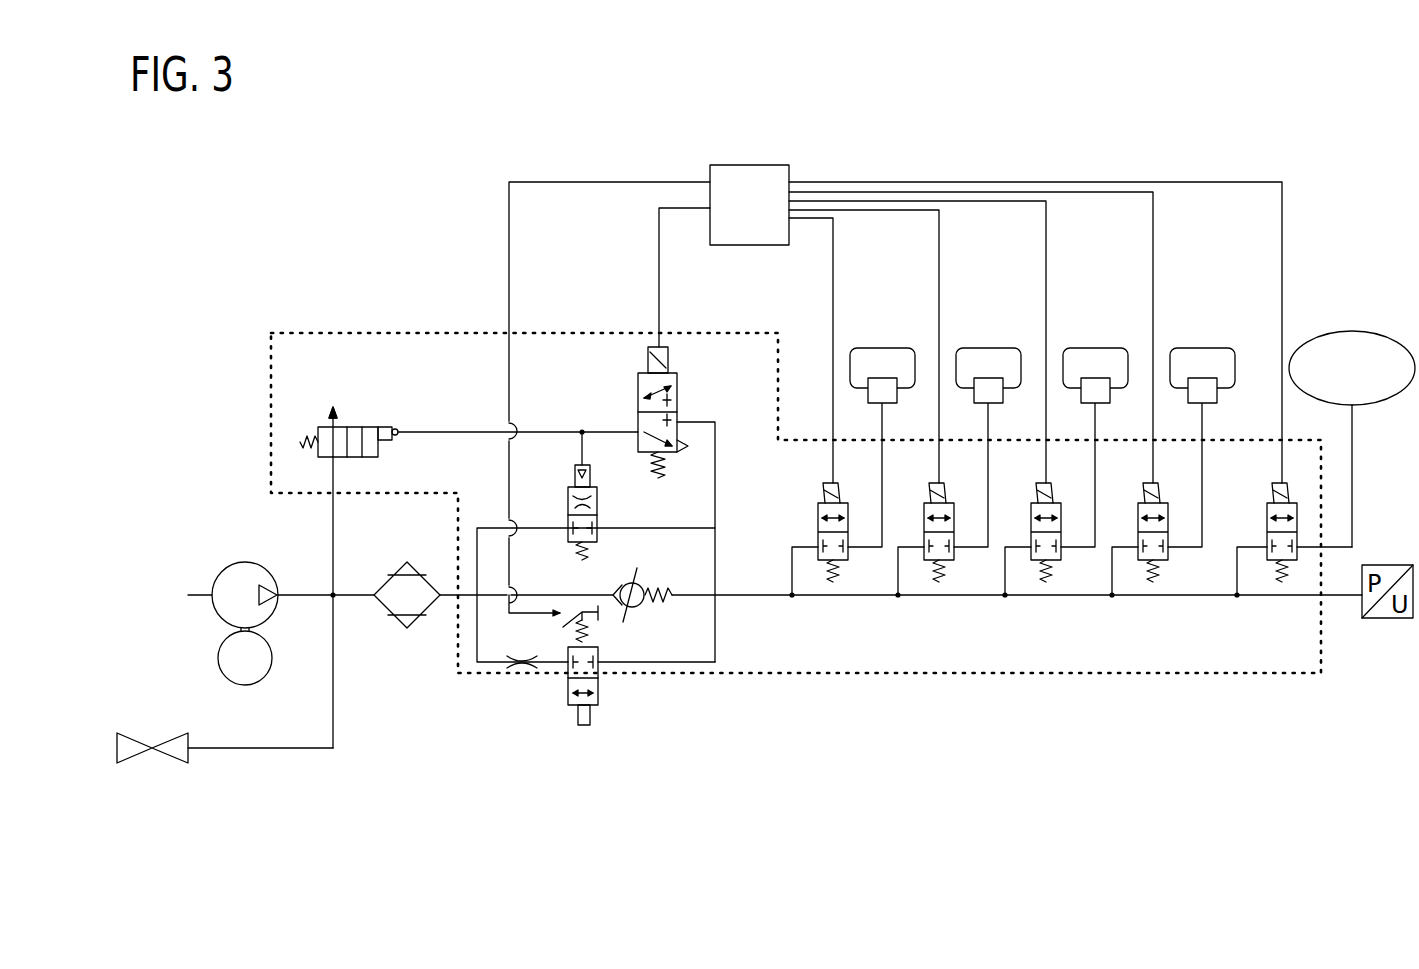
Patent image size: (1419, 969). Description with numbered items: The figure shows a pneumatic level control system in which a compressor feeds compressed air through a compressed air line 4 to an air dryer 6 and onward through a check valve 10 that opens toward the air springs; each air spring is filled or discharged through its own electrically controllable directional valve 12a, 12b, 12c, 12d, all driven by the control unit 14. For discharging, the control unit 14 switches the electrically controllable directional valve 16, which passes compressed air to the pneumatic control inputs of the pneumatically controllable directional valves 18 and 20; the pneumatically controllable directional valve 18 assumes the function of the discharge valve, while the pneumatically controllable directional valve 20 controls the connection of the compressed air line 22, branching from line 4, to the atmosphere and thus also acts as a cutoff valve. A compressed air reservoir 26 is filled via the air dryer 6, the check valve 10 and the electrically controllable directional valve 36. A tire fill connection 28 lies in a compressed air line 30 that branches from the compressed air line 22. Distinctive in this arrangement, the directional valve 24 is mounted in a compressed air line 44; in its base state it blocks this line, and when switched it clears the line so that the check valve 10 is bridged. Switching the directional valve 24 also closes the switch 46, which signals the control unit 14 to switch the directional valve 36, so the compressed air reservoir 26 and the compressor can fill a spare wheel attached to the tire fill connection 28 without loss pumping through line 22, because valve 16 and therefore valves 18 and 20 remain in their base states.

The compressed air line 4 is at (313, 598).
The air dryer 6 is at (390, 612).
The check valve 10 is at (625, 610).
The electrically controllable directional valve 12a is at (852, 442).
The electrically controllable directional valve 12b is at (958, 442).
The electrically controllable directional valve 12c is at (1065, 442).
The electrically controllable directional valve 12d is at (1172, 442).
The control unit 14 is at (730, 177).
The electrically controllable directional valve 16 is at (677, 395).
The pneumatically controllable directional valve 18 is at (597, 527).
The pneumatically controllable directional valve 20 is at (353, 427).
The compressed air line 22 is at (333, 527).
The directional valve 24 is at (598, 705).
The compressed air reservoir 26 is at (1345, 332).
The tire fill connection 28 is at (180, 748).
The compressed air line 30 is at (283, 748).
The electrically controllable directional valve 36 is at (1293, 569).
The compressed air line 44 is at (663, 662).
The switch 46 is at (575, 604).